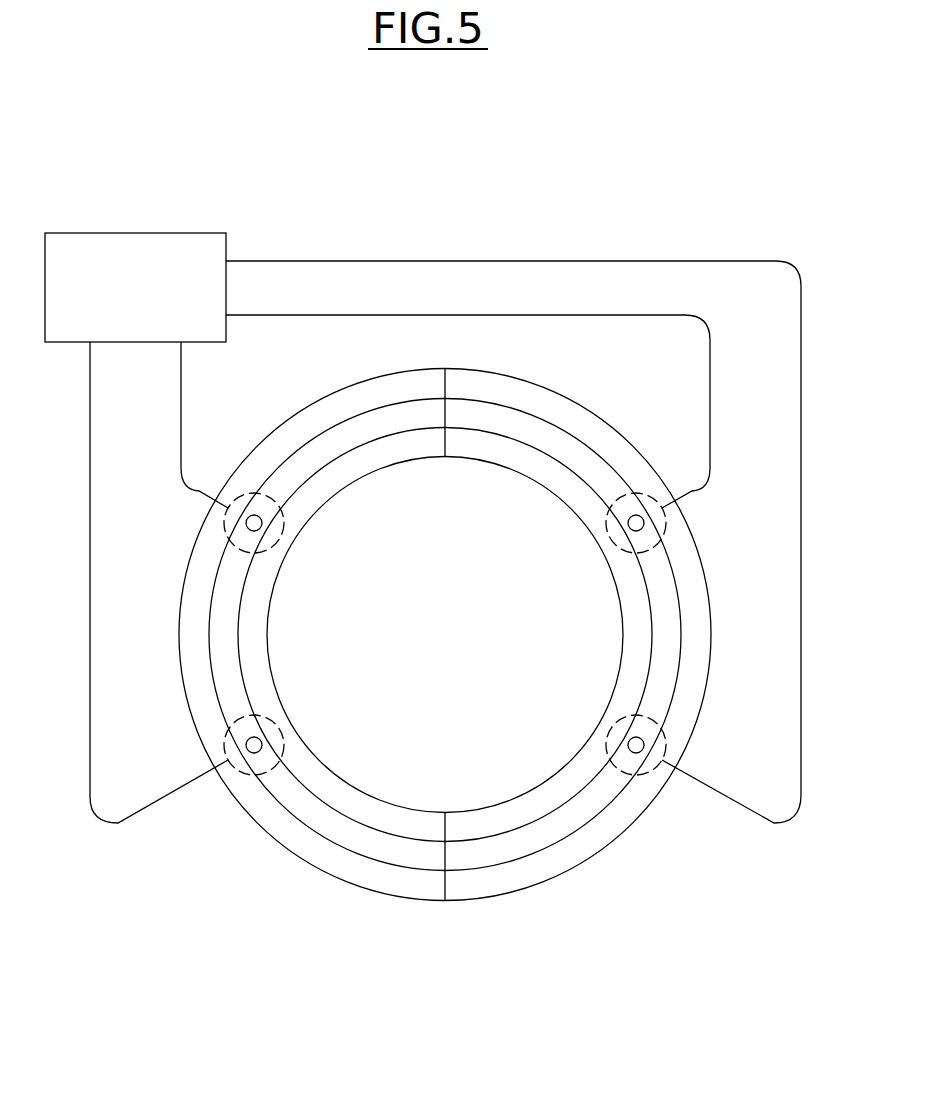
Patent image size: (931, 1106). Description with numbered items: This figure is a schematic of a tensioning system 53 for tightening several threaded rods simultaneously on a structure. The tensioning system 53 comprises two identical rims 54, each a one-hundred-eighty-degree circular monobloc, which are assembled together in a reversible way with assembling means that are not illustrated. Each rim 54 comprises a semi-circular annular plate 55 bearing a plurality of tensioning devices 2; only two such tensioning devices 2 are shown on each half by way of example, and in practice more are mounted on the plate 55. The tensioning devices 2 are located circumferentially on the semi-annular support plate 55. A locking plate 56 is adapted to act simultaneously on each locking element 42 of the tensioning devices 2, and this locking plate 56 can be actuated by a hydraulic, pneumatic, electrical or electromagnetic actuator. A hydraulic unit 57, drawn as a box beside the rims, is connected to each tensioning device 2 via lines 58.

The tensioning device 2 is at (647, 490).
The locking element 42 is at (644, 527).
The tensioning system 53 is at (443, 690).
The rim 54 is at (247, 806).
The semi-circular annular plate 55 is at (527, 384).
The locking plate 56 is at (276, 483).
The hydraulic unit 57 is at (133, 232).
The lines 58 is at (499, 260).